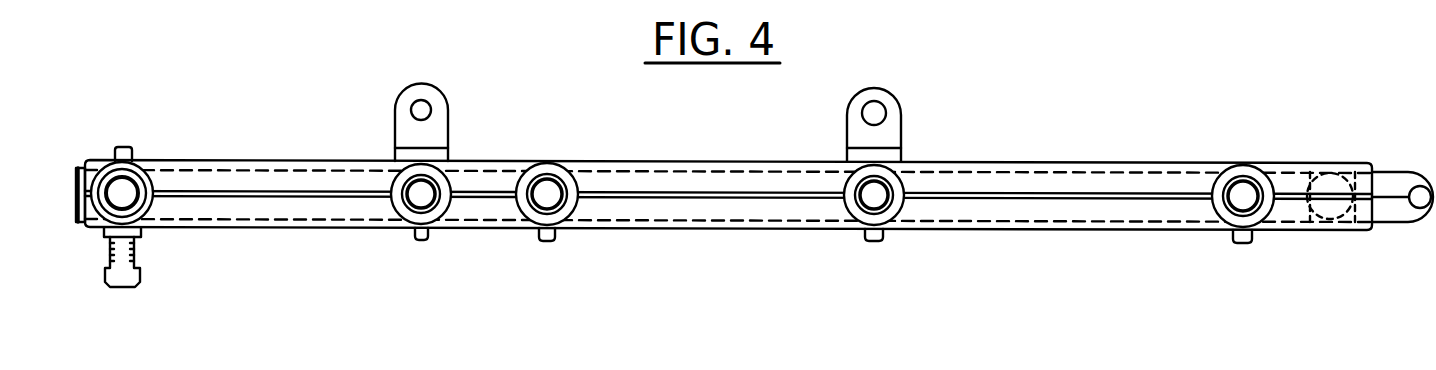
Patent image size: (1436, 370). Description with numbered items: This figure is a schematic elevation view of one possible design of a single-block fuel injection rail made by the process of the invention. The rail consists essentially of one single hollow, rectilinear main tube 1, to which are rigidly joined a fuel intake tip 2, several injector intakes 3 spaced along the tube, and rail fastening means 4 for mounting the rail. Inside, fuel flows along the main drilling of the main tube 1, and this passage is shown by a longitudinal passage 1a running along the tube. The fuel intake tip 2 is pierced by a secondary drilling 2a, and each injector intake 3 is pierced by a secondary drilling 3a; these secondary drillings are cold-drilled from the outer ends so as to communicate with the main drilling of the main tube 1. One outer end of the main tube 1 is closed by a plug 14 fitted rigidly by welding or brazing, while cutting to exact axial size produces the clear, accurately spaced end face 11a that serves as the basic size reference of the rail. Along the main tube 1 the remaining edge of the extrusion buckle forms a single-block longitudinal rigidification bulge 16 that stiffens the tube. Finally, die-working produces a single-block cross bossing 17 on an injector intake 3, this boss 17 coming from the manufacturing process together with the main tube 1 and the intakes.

The main tube 1 is at (652, 160).
The fuel passage 1a is at (712, 175).
The fuel intake tip 2 is at (150, 281).
The secondary drilling for the fuel intake 2a is at (125, 255).
The injector intake 3 is at (576, 192).
The secondary drilling for the injector intake 3a is at (553, 198).
The rail fastening means 4 is at (397, 112).
The end face 11a is at (78, 172).
The plug 14 is at (80, 228).
The longitudinal rigidification bulge 16 is at (250, 190).
The cross bossing 17 is at (537, 238).